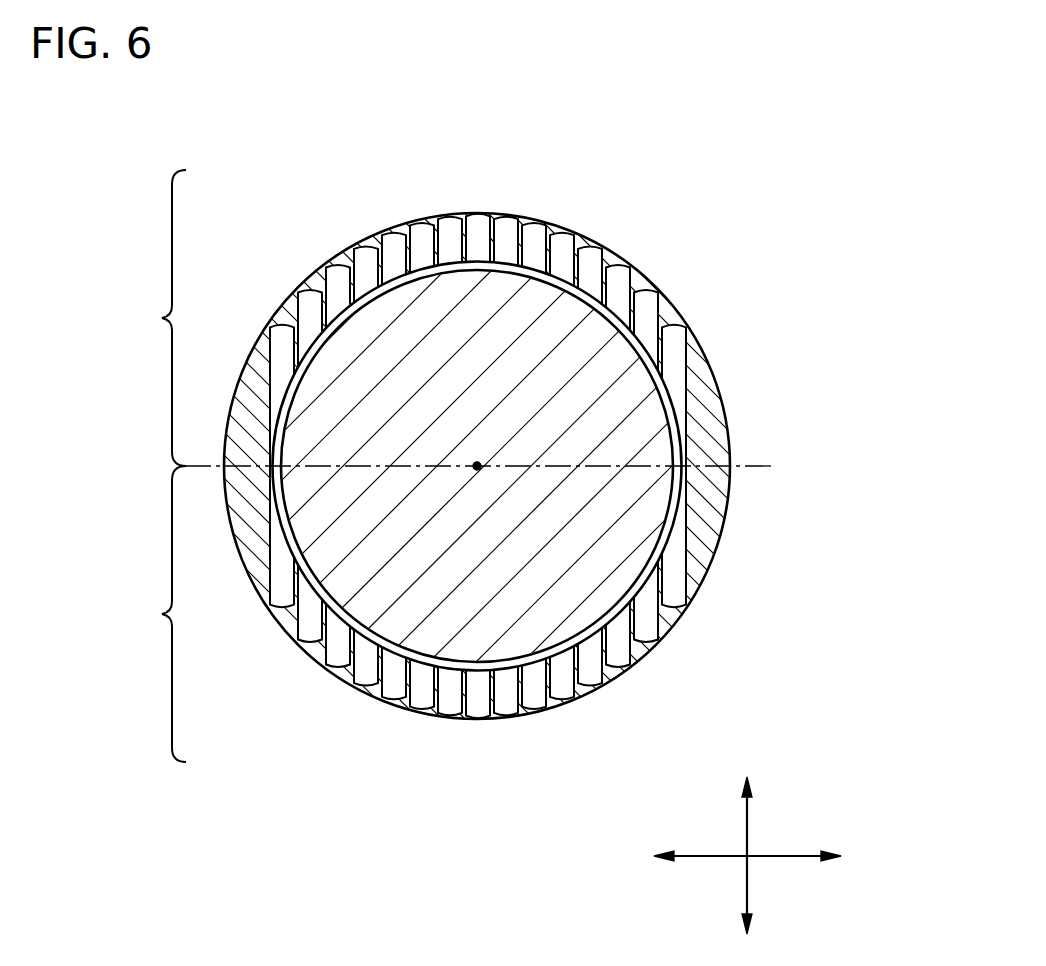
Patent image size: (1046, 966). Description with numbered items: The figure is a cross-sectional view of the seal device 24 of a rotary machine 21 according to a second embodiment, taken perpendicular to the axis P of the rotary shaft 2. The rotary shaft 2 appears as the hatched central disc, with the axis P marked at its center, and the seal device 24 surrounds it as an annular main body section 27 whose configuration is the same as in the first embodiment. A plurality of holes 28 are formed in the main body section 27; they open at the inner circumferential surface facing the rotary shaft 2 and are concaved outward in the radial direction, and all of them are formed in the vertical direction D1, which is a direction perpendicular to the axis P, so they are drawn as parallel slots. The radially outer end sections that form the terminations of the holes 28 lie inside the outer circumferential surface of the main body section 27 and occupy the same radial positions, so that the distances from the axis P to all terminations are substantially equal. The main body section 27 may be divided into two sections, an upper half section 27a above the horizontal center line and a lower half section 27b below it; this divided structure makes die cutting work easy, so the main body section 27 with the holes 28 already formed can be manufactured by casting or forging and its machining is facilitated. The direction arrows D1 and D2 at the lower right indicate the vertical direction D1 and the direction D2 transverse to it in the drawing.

The rotary shaft 2 is at (618, 542).
The rotary machine 21 is at (543, 483).
The seal device 24 is at (518, 483).
The main body section 27 is at (708, 432).
The upper half section 27a is at (149, 318).
The lower half section 27b is at (149, 614).
The holes 28 is at (278, 597).
The axis P is at (478, 464).
The vertical direction D1 is at (748, 822).
The second direction D2 is at (787, 857).